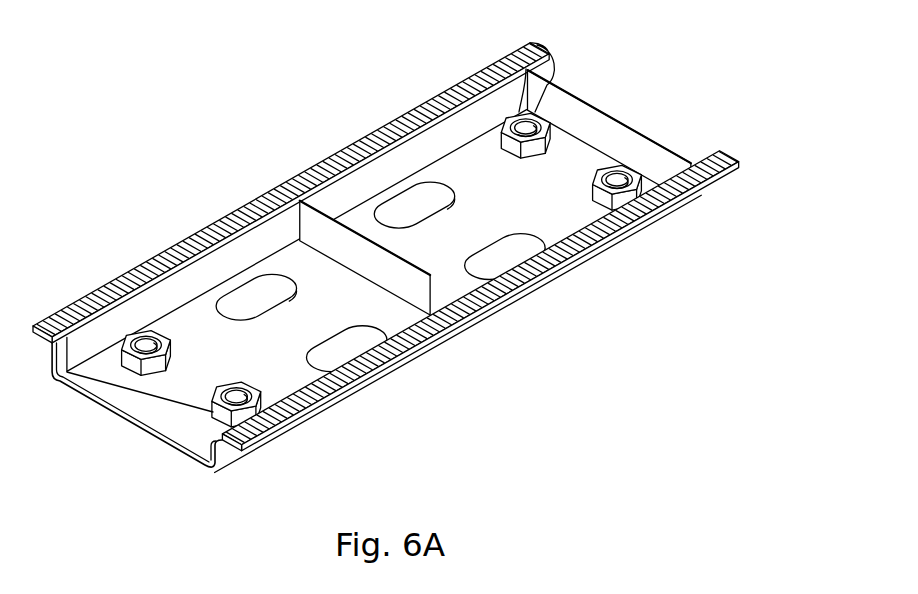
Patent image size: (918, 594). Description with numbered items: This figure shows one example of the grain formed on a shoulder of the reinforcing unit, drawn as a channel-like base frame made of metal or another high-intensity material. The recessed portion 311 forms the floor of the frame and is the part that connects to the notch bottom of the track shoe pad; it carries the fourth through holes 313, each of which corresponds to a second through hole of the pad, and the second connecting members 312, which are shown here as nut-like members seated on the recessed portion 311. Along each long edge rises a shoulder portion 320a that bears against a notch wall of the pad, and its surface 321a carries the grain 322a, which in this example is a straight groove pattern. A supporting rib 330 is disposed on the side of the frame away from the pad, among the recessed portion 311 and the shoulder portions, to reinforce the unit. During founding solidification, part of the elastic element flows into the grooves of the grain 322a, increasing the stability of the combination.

The recessed portion 311 is at (376, 238).
The second connecting member 312 is at (531, 112).
The fourth through hole 313 is at (398, 191).
The shoulder portion 320a is at (734, 165).
The surface 321a is at (141, 269).
The grain 322a is at (200, 242).
The supporting rib 330 is at (648, 161).